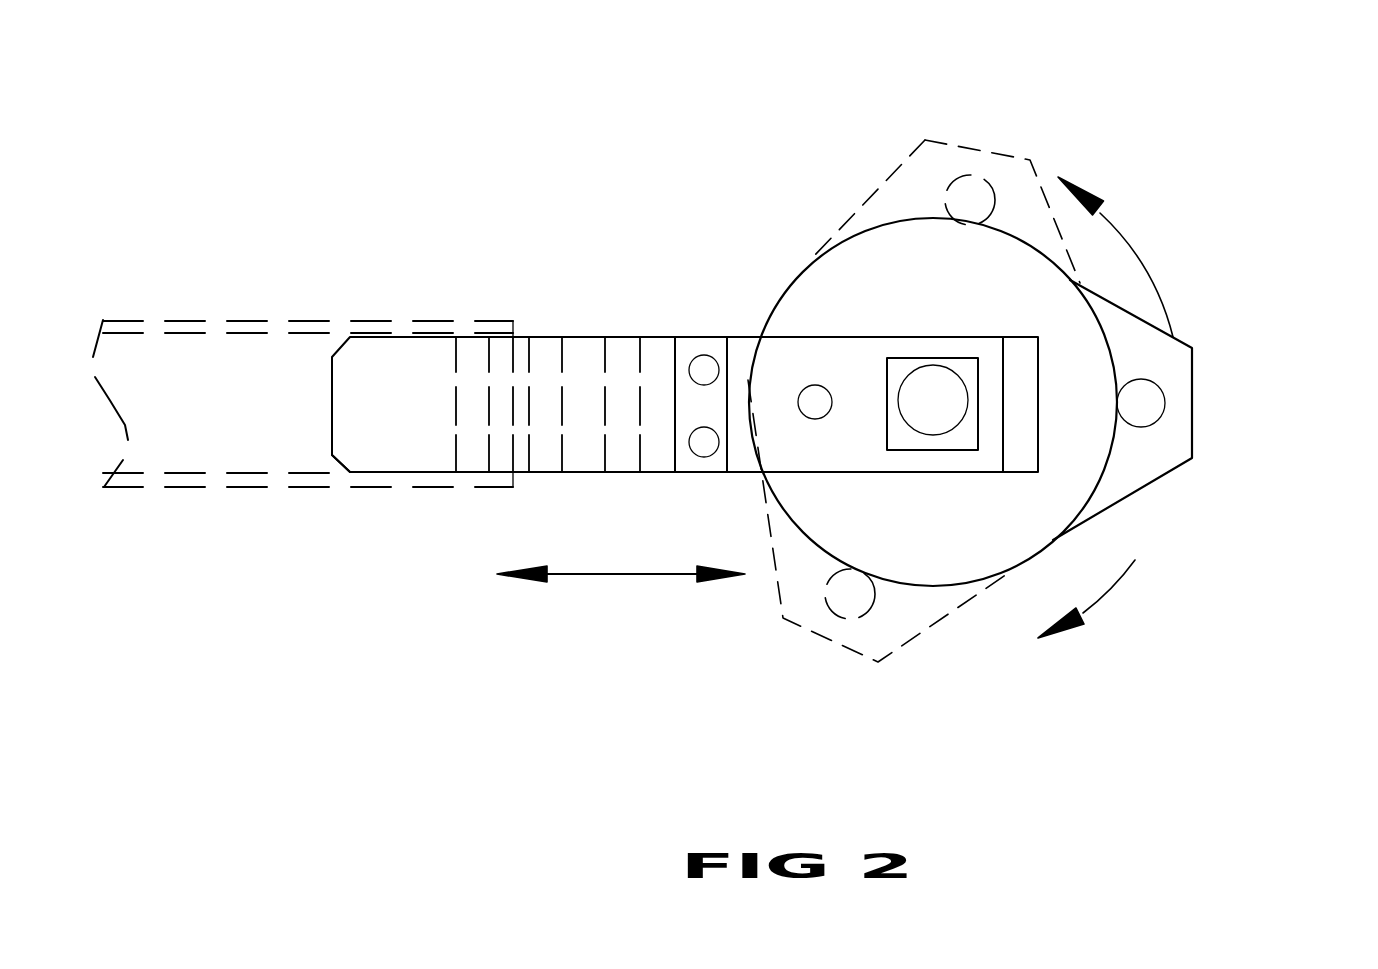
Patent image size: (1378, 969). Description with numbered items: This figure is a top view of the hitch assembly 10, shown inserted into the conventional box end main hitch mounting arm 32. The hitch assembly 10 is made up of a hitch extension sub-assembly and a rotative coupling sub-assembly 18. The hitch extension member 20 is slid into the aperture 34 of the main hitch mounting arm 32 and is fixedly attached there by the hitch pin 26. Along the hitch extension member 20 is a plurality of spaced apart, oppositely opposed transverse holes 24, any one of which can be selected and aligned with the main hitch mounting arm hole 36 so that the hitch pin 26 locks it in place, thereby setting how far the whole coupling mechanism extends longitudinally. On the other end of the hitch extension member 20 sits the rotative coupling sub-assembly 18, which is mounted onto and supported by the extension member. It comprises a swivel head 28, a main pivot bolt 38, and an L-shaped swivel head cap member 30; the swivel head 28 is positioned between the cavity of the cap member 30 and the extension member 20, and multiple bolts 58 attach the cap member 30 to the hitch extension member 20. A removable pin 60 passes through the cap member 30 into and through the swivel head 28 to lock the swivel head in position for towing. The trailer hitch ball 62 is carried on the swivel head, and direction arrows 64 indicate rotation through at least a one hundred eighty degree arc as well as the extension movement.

The hitch assembly 10 is at (697, 660).
The rotative coupling sub-assembly 18 is at (988, 543).
The hitch extension member 20 is at (577, 338).
The transverse holes 24 is at (470, 355).
The hitch pin 26 is at (473, 475).
The swivel head 28 is at (1135, 338).
The L-shaped swivel head cap member 30 is at (832, 355).
The main hitch mounting arm 32 is at (173, 318).
The aperture 34 is at (517, 475).
The main hitch mounting arm hole 36 is at (470, 327).
The main pivot bolt 38 is at (930, 397).
The bolts 58 is at (698, 442).
The removable pin 60 is at (817, 410).
The trailer hitch ball 62 is at (1153, 392).
The direction arrows 64 is at (1110, 218).